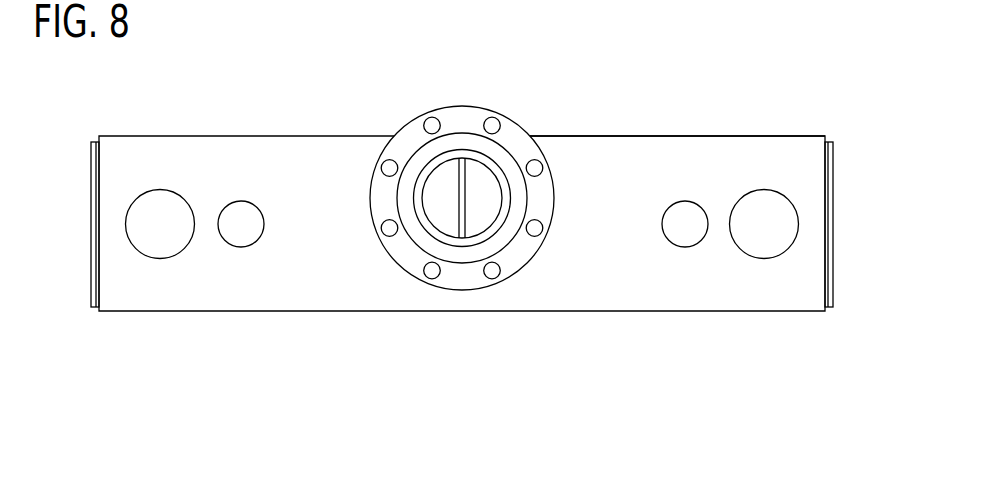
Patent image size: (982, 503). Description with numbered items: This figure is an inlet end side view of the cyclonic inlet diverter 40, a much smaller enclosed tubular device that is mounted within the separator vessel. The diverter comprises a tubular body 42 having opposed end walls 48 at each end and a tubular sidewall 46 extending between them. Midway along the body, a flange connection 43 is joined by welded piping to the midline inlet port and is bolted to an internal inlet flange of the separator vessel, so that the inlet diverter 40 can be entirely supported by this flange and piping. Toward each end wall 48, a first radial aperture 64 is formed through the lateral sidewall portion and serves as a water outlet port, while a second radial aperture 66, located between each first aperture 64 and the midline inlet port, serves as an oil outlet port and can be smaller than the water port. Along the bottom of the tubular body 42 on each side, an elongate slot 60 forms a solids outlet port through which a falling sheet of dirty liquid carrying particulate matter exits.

The cyclonic inlet diverter 40 is at (622, 73).
The tubular body 42 is at (288, 110).
The flange connection 43 is at (457, 106).
The tubular sidewall 46 is at (668, 136).
The end wall 48 is at (91, 214).
The slot 60 is at (128, 322).
The first radial aperture 64 is at (164, 232).
The second radial aperture 66 is at (242, 232).